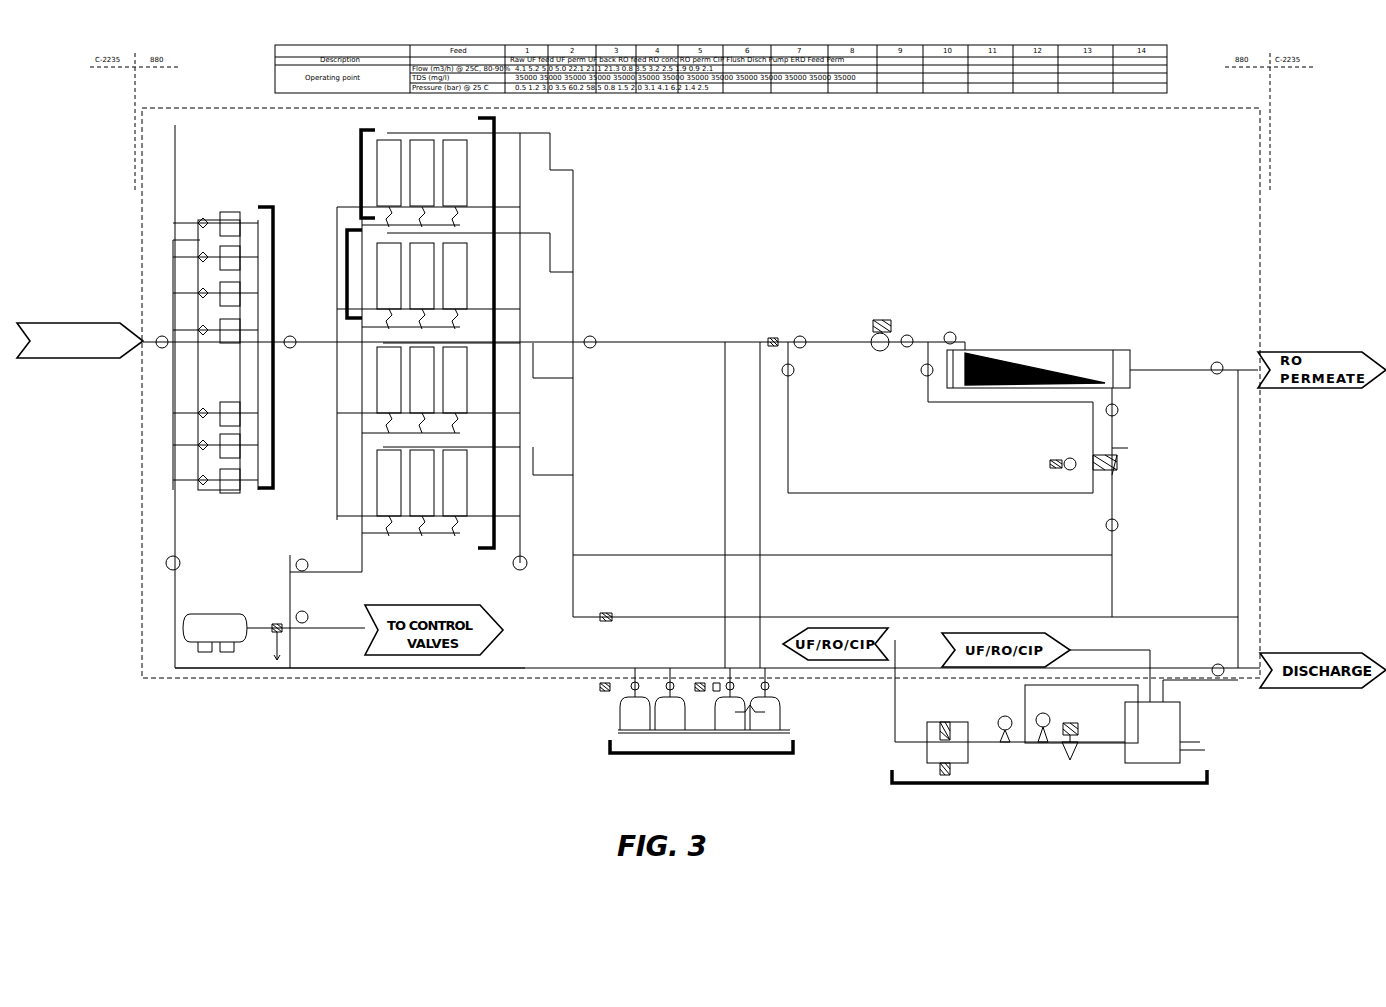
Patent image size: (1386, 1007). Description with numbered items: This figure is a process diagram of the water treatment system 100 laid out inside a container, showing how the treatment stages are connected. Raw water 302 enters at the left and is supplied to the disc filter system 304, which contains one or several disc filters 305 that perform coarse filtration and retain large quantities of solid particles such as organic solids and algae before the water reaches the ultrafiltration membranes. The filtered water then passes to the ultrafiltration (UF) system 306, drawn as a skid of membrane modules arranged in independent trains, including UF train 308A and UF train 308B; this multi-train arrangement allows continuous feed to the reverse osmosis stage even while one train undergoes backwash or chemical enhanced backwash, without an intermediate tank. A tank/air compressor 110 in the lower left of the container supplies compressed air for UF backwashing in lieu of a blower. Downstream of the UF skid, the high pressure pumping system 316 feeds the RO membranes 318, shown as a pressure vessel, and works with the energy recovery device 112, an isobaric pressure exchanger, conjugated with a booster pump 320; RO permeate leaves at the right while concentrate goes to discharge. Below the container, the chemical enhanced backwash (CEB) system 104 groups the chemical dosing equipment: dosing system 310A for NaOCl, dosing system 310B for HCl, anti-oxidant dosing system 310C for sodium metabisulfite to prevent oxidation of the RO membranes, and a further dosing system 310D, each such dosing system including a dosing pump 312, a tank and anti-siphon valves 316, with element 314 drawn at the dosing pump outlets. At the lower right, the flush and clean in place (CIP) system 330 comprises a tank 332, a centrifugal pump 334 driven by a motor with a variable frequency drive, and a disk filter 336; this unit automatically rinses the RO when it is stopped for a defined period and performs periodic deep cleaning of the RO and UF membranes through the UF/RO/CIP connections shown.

The system 100 is at (1183, 108).
The chemical enhanced backwash (CEB) system 104 is at (699, 704).
The tank/air compressor 110 is at (230, 622).
The energy recovery device 112 is at (1100, 473).
The raw water 302 is at (68, 323).
The disc filter system 304 is at (245, 338).
The disc filters 305 is at (227, 408).
The ultrafiltration (UF) system 306 is at (453, 341).
The UF train 308A is at (360, 167).
The UF train 308B is at (347, 297).
The dosing system 310A is at (625, 697).
The dosing system 310B is at (680, 693).
The anti-oxidant dosing system 310C is at (713, 727).
The fourth pump 310D is at (777, 733).
The dosing pump 312 is at (733, 683).
The pump outlet line 314 is at (773, 712).
The high pressure pumping system 316 is at (873, 340).
The RO membranes 318 is at (1105, 385).
The booster pump 320 is at (1073, 470).
The flush and clean in place (CIP) system 330 is at (1079, 734).
The tank 332 is at (1180, 727).
The centrifugal pump 334 is at (1077, 740).
The disc filter 336 is at (925, 752).